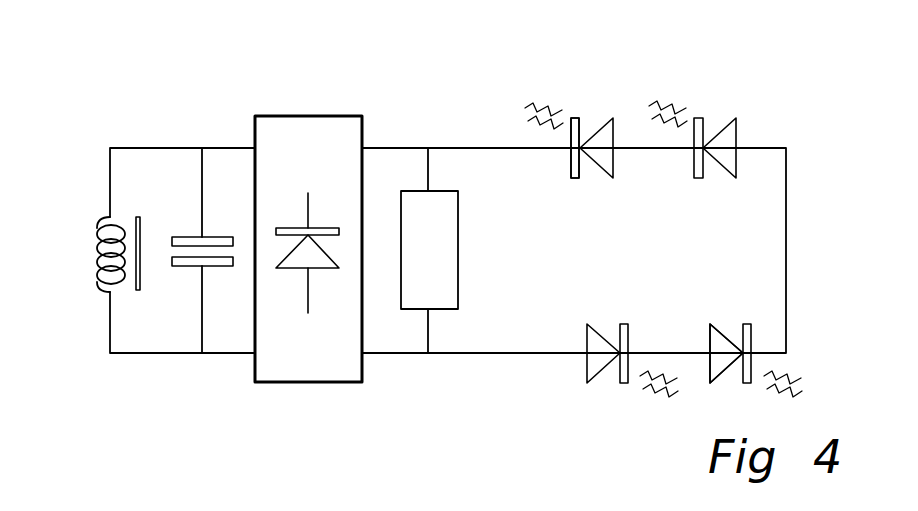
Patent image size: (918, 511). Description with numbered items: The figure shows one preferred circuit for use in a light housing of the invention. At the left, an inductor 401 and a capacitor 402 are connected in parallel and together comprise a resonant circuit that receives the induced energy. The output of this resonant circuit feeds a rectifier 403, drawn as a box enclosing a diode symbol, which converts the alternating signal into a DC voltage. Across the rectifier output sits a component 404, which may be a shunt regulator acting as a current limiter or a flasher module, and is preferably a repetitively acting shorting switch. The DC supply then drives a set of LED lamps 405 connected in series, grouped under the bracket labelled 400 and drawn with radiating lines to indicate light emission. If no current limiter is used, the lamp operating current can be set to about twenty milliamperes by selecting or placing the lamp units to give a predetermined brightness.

The LED array 400 is at (713, 60).
The resonant circuit inductor 401 is at (97, 220).
The resonant circuit capacitor 402 is at (214, 237).
The rectifier 403 is at (297, 115).
The shunt regulator 404 is at (458, 193).
The set of LED lamps 405 is at (712, 330).